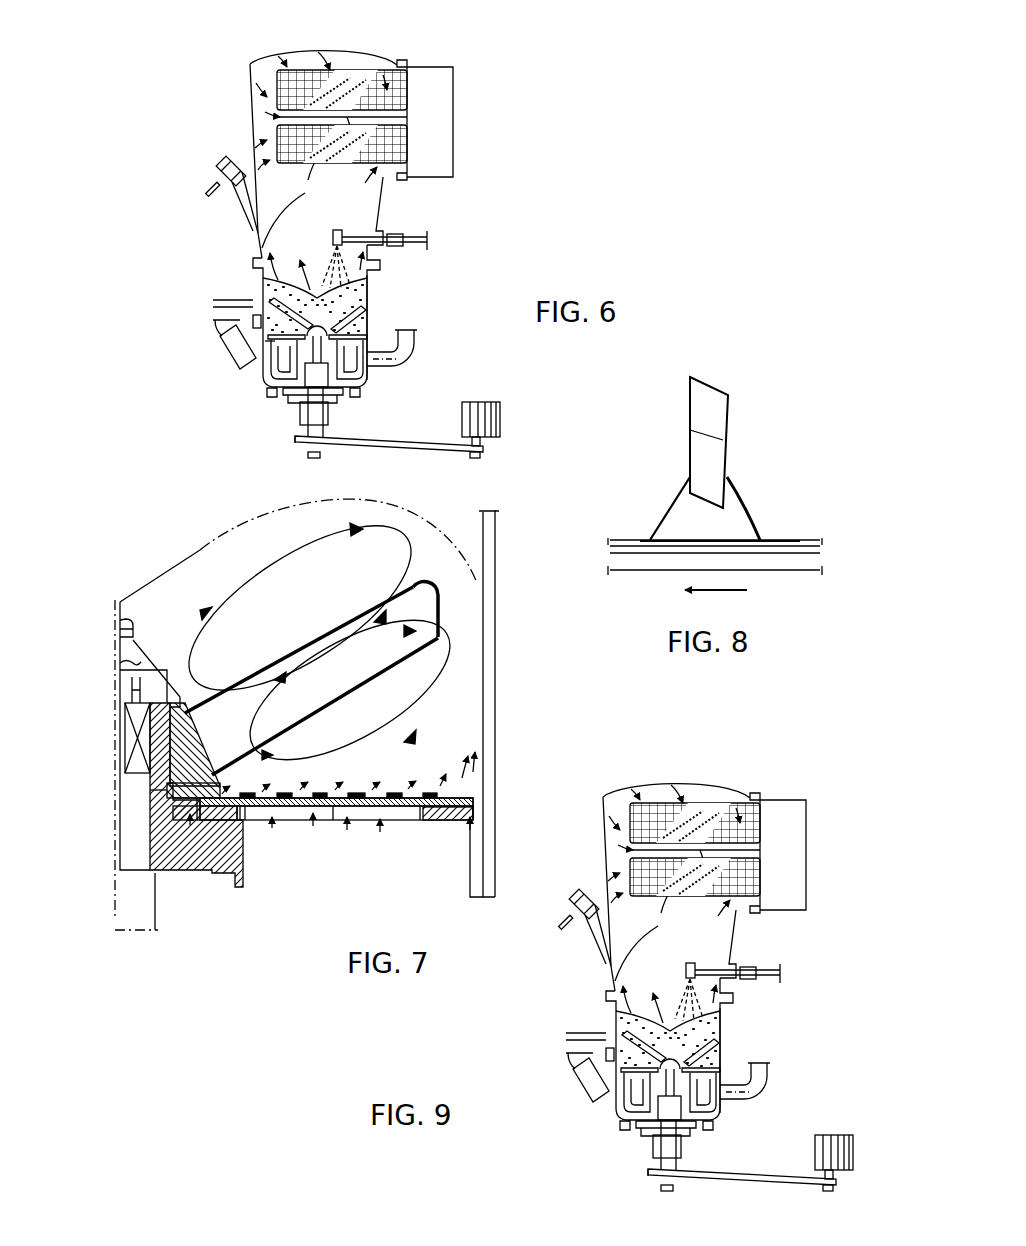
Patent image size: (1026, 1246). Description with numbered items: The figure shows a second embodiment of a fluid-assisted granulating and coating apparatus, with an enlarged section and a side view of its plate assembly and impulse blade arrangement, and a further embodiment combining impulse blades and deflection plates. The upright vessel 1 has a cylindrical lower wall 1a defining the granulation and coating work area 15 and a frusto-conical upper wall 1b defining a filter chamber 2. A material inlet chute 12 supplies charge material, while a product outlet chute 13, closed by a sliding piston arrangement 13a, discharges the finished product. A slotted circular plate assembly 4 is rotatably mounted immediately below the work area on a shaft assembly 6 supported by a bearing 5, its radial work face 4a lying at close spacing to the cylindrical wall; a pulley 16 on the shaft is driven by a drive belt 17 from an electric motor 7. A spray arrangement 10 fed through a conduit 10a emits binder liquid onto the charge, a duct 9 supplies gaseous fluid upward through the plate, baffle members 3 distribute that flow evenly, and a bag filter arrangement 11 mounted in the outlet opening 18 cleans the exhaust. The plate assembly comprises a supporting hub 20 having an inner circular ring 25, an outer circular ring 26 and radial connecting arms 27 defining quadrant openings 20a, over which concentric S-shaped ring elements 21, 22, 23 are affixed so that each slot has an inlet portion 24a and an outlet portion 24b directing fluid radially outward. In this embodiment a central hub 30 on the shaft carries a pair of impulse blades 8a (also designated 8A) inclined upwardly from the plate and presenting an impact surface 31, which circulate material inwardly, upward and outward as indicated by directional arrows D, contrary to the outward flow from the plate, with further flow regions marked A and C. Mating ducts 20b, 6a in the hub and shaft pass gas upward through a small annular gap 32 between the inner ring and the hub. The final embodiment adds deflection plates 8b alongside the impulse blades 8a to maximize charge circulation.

In FIG. 6, the upright vessel 1 is at (263, 300).
In FIG. 7, the upright vessel 1 is at (483, 857).
In FIG. 9, the upright vessel 1 is at (653, 1049).
In FIG. 6, the cylindrical annular lower wall 1a is at (371, 302).
In FIG. 9, the cylindrical annular lower wall 1a is at (765, 1060).
In FIG. 6, the frusto-conical upper annular wall 1b is at (380, 213).
In FIG. 9, the frusto-conical upper annular wall 1b is at (713, 887).
In FIG. 6, the filter chamber 2 is at (260, 246).
In FIG. 9, the filter chamber 2 is at (616, 957).
In FIG. 6, the baffle members 3 is at (270, 360).
In FIG. 9, the baffle members 3 is at (648, 1104).
In FIG. 6, the plate assembly 4 is at (368, 330).
In FIG. 8, the plate assembly 4 is at (616, 553).
In FIG. 7, the plate assembly 4 is at (380, 821).
In FIG. 9, the plate assembly 4 is at (681, 1056).
In FIG. 6, the radial work face 4a is at (250, 345).
In FIG. 8, the radial work face 4a is at (815, 505).
In FIG. 6, the bearing 5 is at (328, 418).
In FIG. 9, the bearing 5 is at (684, 1125).
In FIG. 6, the shaft assembly 6 is at (300, 420).
In FIG. 7, the shaft assembly 6 is at (178, 873).
In FIG. 9, the shaft assembly 6 is at (644, 1150).
In FIG. 7, the duct 6a is at (220, 840).
In FIG. 6, the electric motor 7 is at (462, 420).
In FIG. 9, the electric motor 7 is at (809, 1157).
In FIG. 8, the impulse blades 8a is at (713, 455).
In FIG. 7, the impulse blades 8a is at (393, 597).
In FIG. 9, the impulse blades 8a is at (696, 1026).
In FIG. 6, the impulse blades 8A is at (352, 300).
In FIG. 9, the deflection plates 8b is at (734, 1037).
In FIG. 6, the duct 9 is at (398, 367).
In FIG. 9, the duct 9 is at (745, 1100).
In FIG. 6, the spray arrangement 10 is at (333, 238).
In FIG. 9, the spray arrangement 10 is at (673, 989).
In FIG. 6, the conduit 10a is at (414, 248).
In FIG. 9, the conduit 10a is at (764, 991).
In FIG. 6, the bag filter arrangement 11 is at (350, 80).
In FIG. 9, the bag filter arrangement 11 is at (695, 823).
In FIG. 6, the material inlet chute 12 is at (230, 165).
In FIG. 9, the material inlet chute 12 is at (565, 920).
In FIG. 6, the product outlet chute 13 is at (222, 347).
In FIG. 9, the product outlet chute 13 is at (574, 1087).
In FIG. 6, the sliding piston arrangement 13a is at (213, 310).
In FIG. 9, the sliding piston arrangement 13a is at (549, 1056).
In FIG. 6, the granulation and coating work area 15 is at (220, 300).
In FIG. 9, the granulation and coating work area 15 is at (567, 1019).
In FIG. 6, the pulley 16 is at (296, 440).
In FIG. 9, the pulley 16 is at (626, 1187).
In FIG. 6, the drive belt 17 is at (397, 448).
In FIG. 9, the drive belt 17 is at (742, 1197).
In FIG. 6, the outlet opening 18 is at (407, 178).
In FIG. 9, the outlet opening 18 is at (773, 869).
In FIG. 8, the supporting hub 20 is at (762, 565).
In FIG. 7, the supporting hub 20 is at (450, 820).
In FIG. 7, the quadrant openings 20a is at (422, 823).
In FIG. 7, the duct 20b is at (210, 783).
In FIG. 7, the circular ring element 21 is at (433, 795).
In FIG. 7, the circular ring element 22 is at (415, 777).
In FIG. 7, the circular ring element 23 is at (373, 777).
In FIG. 7, the inlet portion 24a is at (273, 817).
In FIG. 7, the outlet portion 24b is at (300, 798).
In FIG. 7, the inner circular ring 25 is at (250, 820).
In FIG. 7, the outer circular ring 26 is at (473, 812).
In FIG. 7, the radial connecting arms 27 is at (333, 821).
In FIG. 8, the central hub 30 is at (677, 515).
In FIG. 7, the central hub 30 is at (188, 712).
In FIG. 8, the impact surface 31 is at (707, 448).
In FIG. 7, the impact surface 31 is at (357, 670).
In FIG. 7, the annular gap 32 is at (150, 790).
In FIG. 7, the air flow region A is at (347, 848).
In FIG. 7, the circulation flow C is at (350, 689).
In FIG. 7, the directional arrows D is at (299, 608).